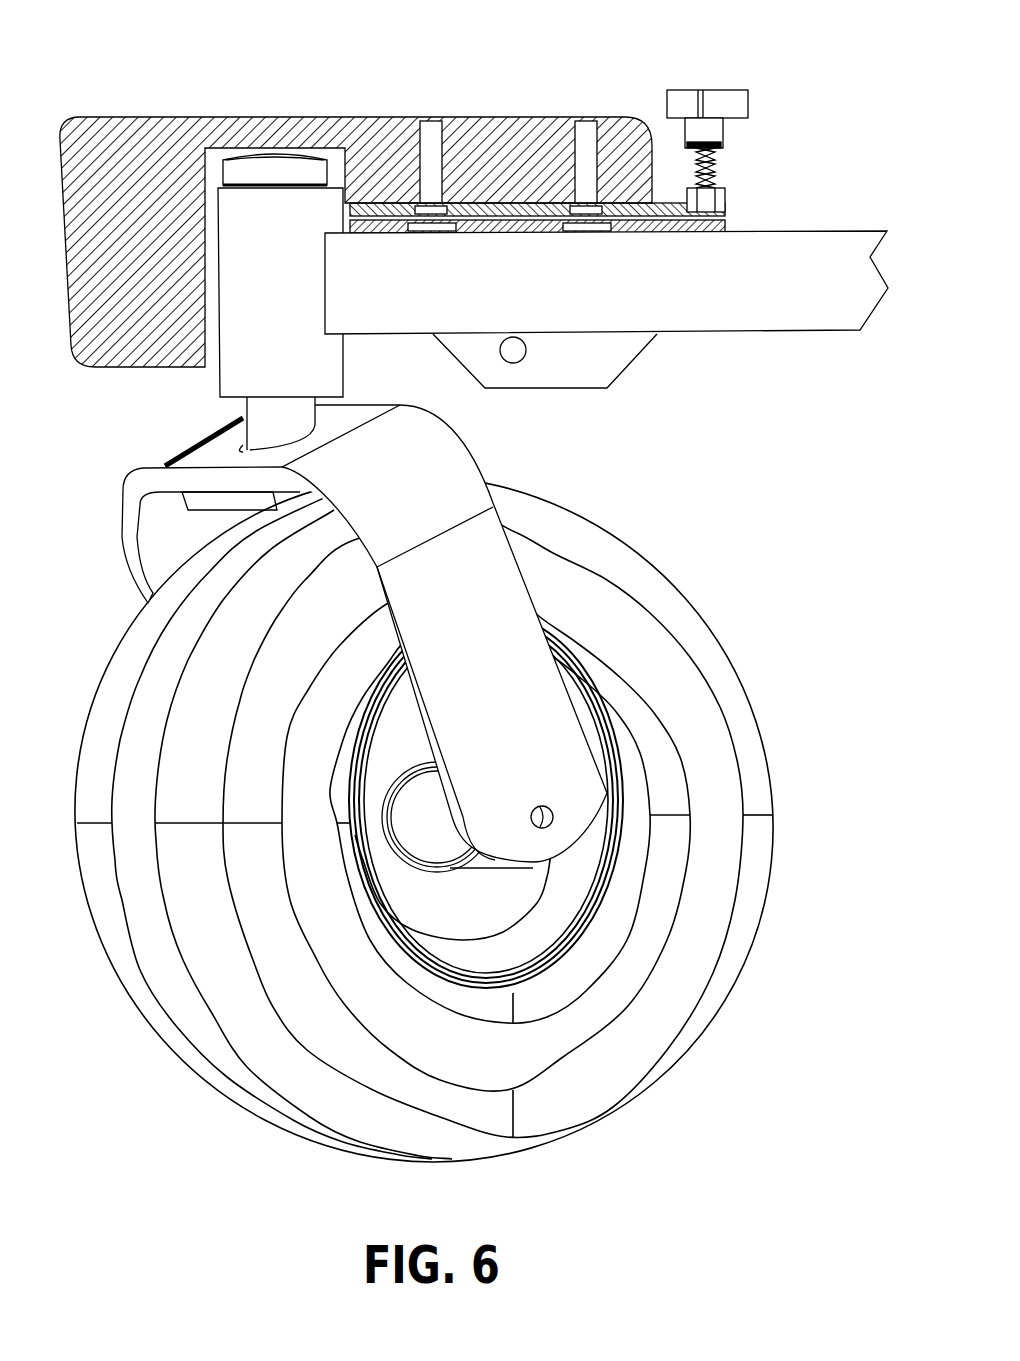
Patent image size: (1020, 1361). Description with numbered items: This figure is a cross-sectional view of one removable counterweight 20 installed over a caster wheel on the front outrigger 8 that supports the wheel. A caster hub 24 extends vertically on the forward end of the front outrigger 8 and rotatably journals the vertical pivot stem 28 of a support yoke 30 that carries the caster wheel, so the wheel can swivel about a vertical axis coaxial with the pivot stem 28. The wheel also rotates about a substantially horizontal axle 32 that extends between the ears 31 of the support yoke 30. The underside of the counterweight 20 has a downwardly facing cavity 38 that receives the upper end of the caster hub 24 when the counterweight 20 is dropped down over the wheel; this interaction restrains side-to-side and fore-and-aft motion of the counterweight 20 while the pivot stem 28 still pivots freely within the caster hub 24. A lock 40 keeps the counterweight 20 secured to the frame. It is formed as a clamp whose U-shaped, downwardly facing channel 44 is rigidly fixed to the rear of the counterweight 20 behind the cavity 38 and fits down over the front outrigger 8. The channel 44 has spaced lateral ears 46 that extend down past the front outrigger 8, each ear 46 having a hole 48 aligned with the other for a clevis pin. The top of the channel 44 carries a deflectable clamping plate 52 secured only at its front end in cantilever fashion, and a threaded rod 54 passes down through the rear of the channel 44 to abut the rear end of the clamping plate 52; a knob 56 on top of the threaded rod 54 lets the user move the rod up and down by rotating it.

The front outrigger 8 is at (800, 230).
The counterweight 20 is at (355, 120).
The caster hub 24 is at (285, 303).
The vertical pivot stem 28 is at (263, 415).
The support yoke 30 is at (344, 636).
The ears 31 is at (145, 590).
The horizontal axle 32 is at (435, 833).
The cavity 38 is at (223, 148).
The lock 40 is at (739, 113).
The channel 44 is at (562, 225).
The lateral ears 46 is at (612, 356).
The hole 48 is at (500, 352).
The clamping plate 52 is at (645, 225).
The threaded rod 54 is at (715, 165).
The knob 56 is at (738, 100).